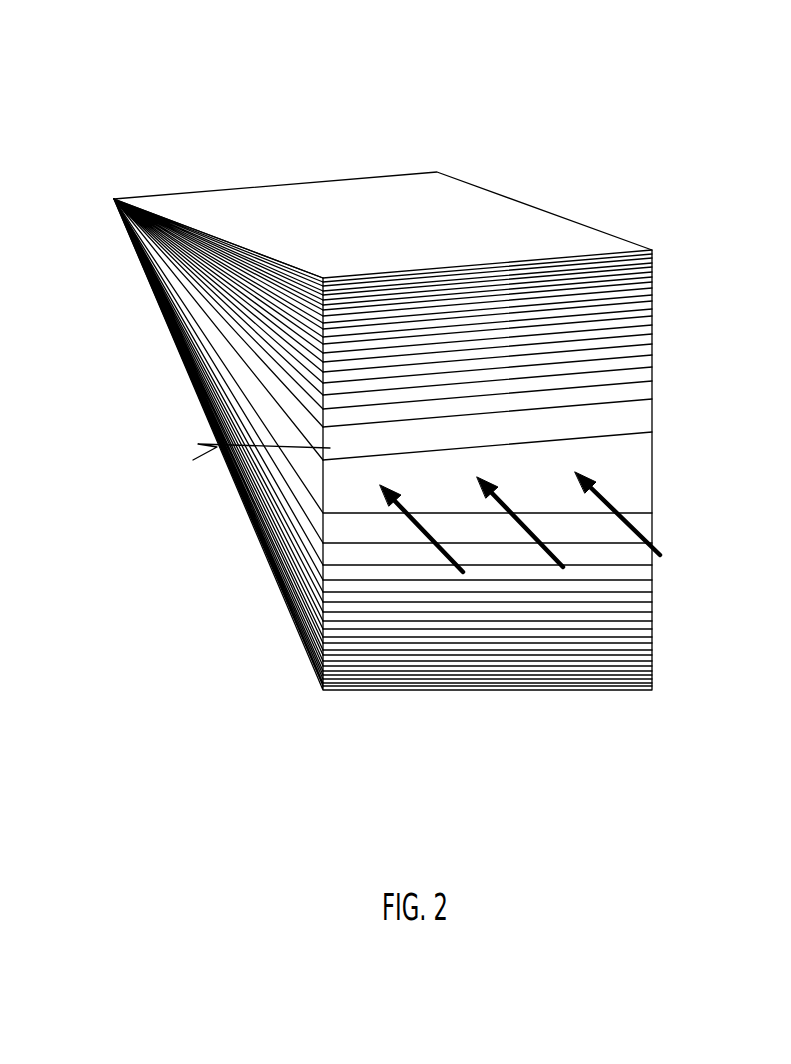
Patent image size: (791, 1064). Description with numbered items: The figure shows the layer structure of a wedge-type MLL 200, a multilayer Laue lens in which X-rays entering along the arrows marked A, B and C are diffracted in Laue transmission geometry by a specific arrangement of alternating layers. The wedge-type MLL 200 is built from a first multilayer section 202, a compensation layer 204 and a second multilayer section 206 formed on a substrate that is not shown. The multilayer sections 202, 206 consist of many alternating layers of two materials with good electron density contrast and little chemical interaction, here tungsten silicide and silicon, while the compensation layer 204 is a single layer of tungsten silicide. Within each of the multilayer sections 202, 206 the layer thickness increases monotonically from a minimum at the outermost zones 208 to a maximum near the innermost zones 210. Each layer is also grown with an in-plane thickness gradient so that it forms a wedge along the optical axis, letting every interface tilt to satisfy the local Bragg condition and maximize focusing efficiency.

The wedge-type MLL 200 is at (452, 37).
The first multilayer section 202 is at (653, 620).
The compensation layer 204 is at (653, 487).
The second multilayer section 206 is at (653, 352).
The outermost zones 208 is at (322, 691).
The innermost zones 210 is at (330, 530).